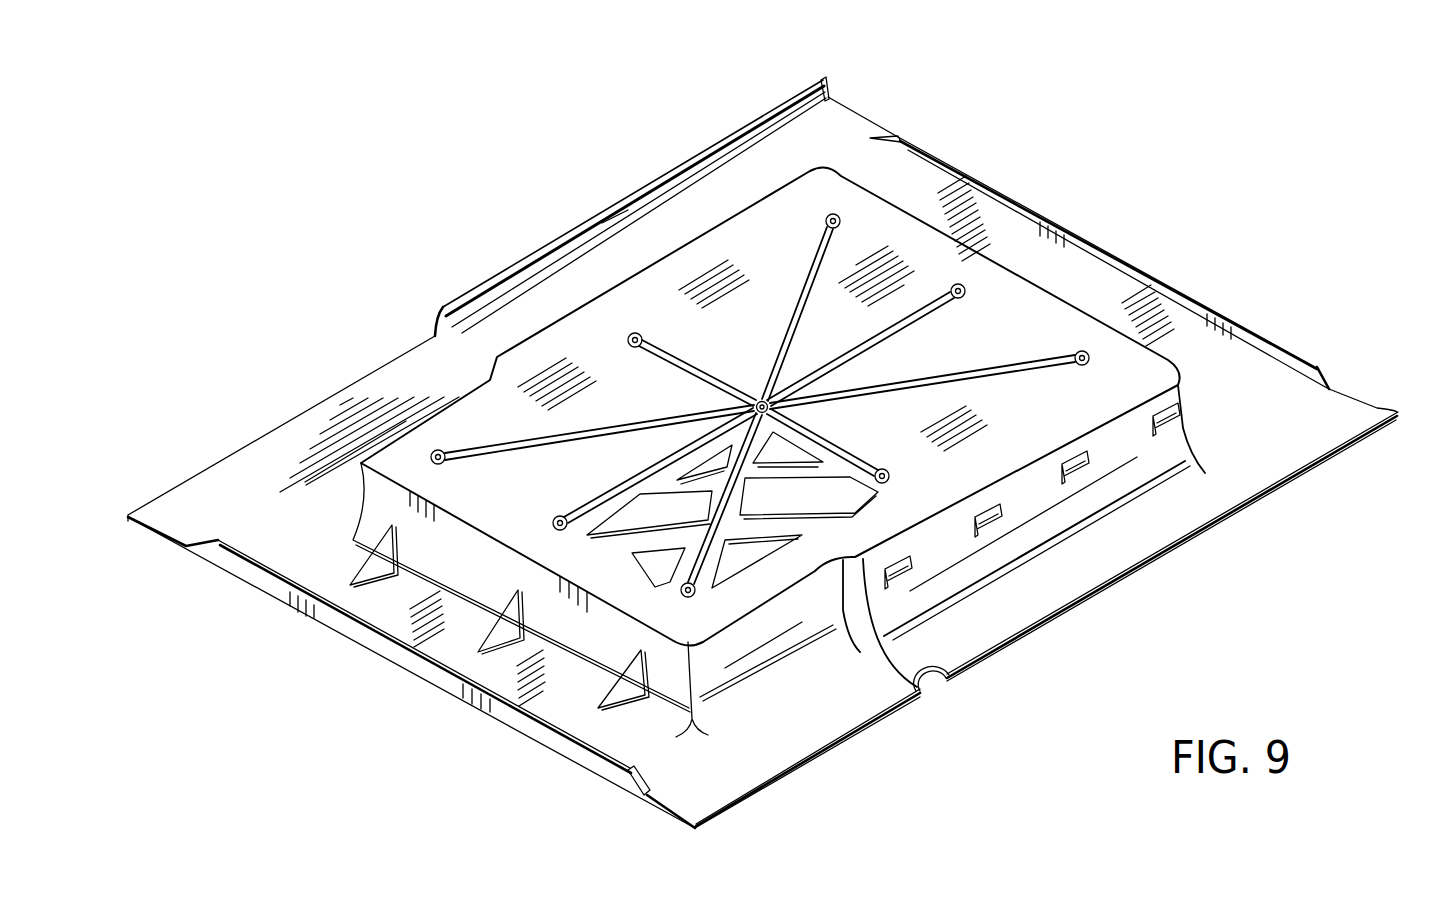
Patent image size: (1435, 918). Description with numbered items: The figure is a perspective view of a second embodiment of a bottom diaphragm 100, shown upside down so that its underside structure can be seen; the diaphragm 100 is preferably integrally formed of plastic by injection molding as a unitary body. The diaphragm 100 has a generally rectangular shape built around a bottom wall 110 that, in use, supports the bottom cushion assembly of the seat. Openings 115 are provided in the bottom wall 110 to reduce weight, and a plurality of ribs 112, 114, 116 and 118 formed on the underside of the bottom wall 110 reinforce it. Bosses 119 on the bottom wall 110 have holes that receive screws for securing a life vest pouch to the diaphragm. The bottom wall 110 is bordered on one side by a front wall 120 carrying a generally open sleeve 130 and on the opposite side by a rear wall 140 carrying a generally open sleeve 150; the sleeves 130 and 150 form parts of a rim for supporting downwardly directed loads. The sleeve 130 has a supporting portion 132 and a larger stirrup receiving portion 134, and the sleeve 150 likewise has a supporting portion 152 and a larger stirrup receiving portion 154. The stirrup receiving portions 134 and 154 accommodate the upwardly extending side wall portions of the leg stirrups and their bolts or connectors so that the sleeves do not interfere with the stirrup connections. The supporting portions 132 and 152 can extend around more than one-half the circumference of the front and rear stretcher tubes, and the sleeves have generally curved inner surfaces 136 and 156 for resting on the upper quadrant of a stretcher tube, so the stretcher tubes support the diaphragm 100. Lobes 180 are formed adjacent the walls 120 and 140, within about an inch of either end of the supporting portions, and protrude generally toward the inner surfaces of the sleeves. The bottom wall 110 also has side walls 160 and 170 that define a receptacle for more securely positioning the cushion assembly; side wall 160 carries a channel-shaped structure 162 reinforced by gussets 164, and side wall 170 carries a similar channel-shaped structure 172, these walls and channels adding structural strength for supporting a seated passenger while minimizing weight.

The bottom diaphragm 100 is at (287, 417).
The bottom wall 110 is at (870, 220).
The rib 112 is at (683, 366).
The rib 114 is at (890, 330).
The openings 115 is at (660, 515).
The rib 116 is at (503, 449).
The rib 118 is at (778, 358).
The bosses 119 is at (1077, 353).
The front wall 120 is at (1186, 425).
The sleeve 130 is at (1098, 543).
The supporting portion 132 is at (1260, 497).
The stirrup receiving portion 134 is at (770, 678).
The curved inner surface 136 is at (1015, 619).
The rear wall 140 is at (590, 298).
The sleeve 150 is at (730, 183).
The supporting portion 152 is at (793, 95).
The stirrup receiving portion 154 is at (423, 370).
The curved inner surface 156 is at (616, 218).
The side wall 160 is at (376, 498).
The channel-shaped structure 162 is at (397, 653).
The gussets 164 is at (372, 565).
The side wall 170 is at (1060, 298).
The channel-shaped structure 172 is at (1017, 210).
The lobes 180 is at (1070, 460).